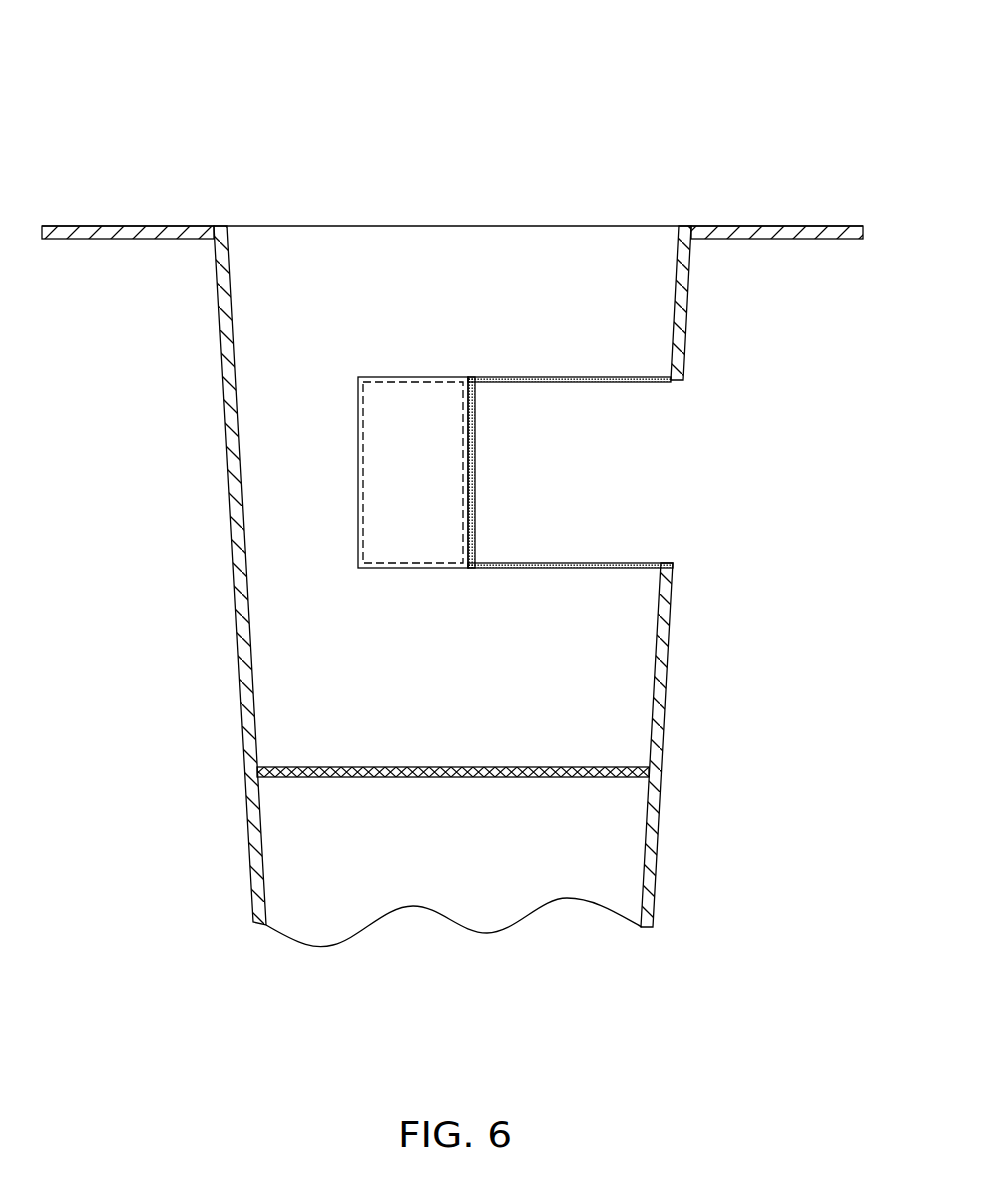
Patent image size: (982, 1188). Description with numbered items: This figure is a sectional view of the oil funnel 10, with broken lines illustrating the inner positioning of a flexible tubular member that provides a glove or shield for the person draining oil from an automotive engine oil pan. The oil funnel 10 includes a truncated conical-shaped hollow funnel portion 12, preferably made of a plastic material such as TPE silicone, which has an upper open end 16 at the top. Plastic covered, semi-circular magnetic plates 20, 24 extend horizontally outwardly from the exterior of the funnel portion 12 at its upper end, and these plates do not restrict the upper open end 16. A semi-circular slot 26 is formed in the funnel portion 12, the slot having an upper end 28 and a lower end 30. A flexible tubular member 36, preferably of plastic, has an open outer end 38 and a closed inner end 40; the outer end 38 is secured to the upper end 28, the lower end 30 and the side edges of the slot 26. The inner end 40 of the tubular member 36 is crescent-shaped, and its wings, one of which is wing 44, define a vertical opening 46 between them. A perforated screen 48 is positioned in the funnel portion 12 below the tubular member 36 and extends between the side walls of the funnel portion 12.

The oil funnel 10 is at (722, 168).
The funnel portion 12 is at (236, 641).
The upper open end 16 is at (428, 226).
The magnetic plate 20 is at (130, 228).
The magnetic plate 24 is at (806, 226).
The slot 26 is at (672, 438).
The upper end of slot 28 is at (680, 380).
The lower end of slot 30 is at (672, 572).
The flexible tubular member 36 is at (533, 376).
The open outer end 38 is at (664, 562).
The closed inner end 40 is at (476, 465).
The wing 44 is at (375, 377).
The vertical opening 46 is at (305, 430).
The perforated screen 48 is at (577, 768).